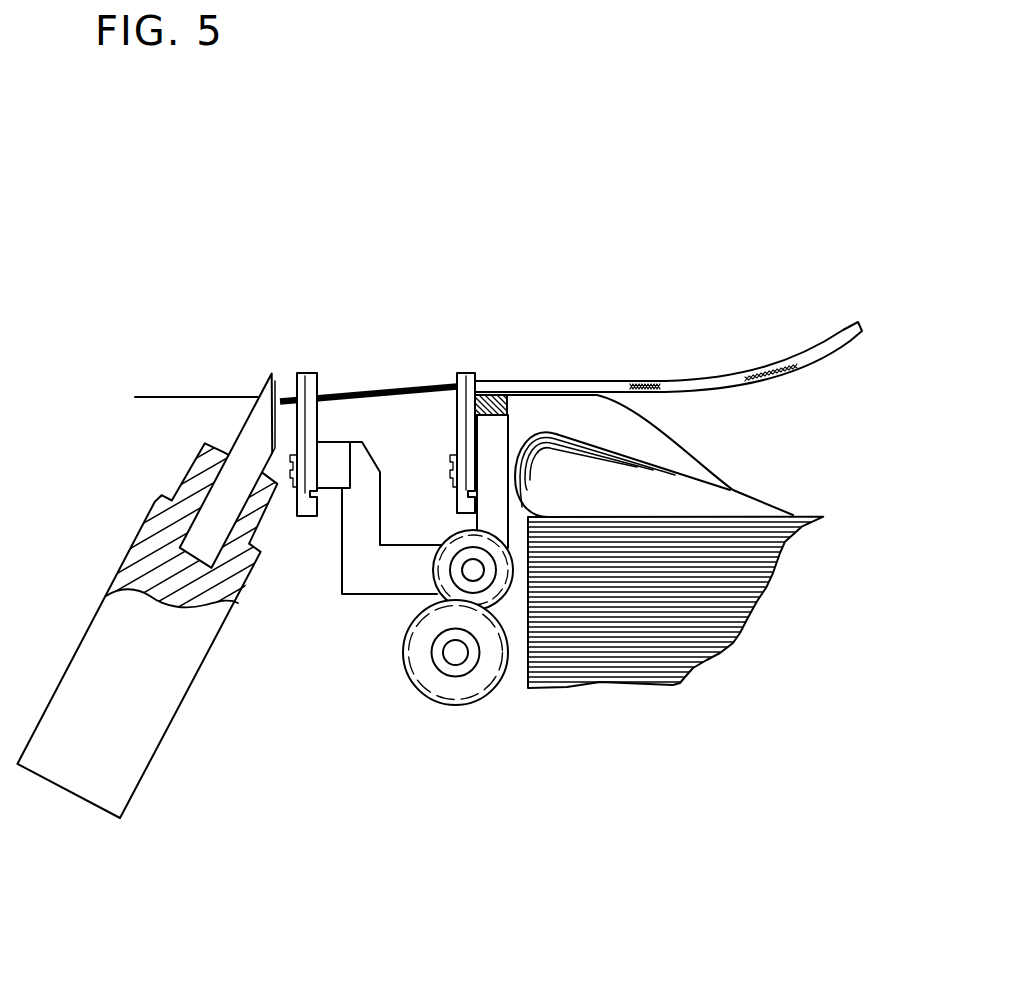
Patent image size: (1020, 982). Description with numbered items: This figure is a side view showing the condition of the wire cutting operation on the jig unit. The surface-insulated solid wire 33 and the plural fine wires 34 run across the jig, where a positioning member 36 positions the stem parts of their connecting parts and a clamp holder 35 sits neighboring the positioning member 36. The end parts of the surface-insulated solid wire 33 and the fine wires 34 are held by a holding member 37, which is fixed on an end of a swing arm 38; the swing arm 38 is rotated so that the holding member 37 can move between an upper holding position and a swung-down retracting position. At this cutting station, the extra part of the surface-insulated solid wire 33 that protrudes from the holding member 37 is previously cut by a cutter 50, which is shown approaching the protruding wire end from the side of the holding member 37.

The guide line 33 is at (198, 397).
The tape web 34 is at (407, 387).
The spacer block 35 is at (502, 393).
The guide plate 36 is at (468, 370).
The guide plate 37 is at (310, 364).
The bracket 38 is at (387, 575).
The cutter blade assembly 50 is at (193, 655).